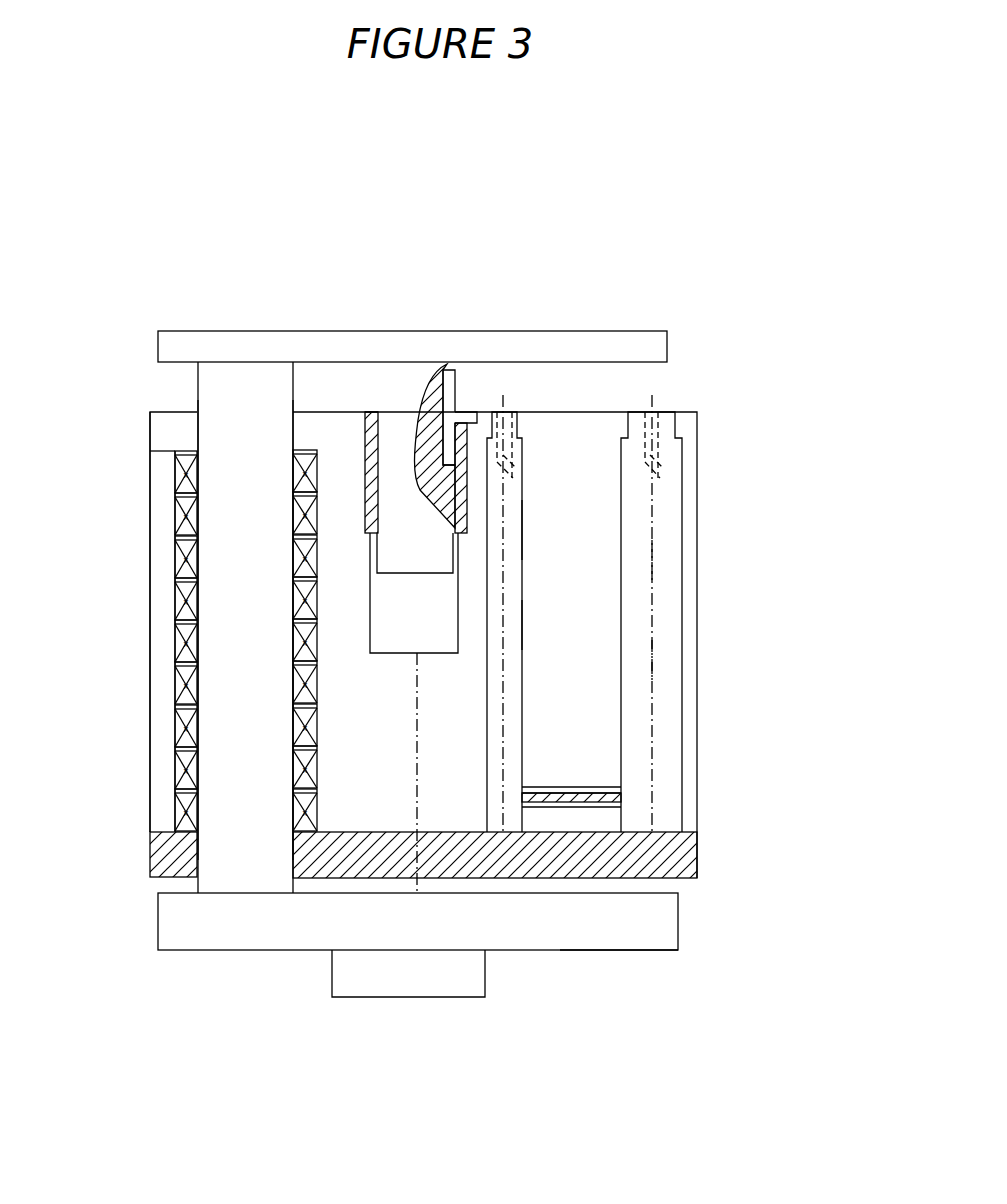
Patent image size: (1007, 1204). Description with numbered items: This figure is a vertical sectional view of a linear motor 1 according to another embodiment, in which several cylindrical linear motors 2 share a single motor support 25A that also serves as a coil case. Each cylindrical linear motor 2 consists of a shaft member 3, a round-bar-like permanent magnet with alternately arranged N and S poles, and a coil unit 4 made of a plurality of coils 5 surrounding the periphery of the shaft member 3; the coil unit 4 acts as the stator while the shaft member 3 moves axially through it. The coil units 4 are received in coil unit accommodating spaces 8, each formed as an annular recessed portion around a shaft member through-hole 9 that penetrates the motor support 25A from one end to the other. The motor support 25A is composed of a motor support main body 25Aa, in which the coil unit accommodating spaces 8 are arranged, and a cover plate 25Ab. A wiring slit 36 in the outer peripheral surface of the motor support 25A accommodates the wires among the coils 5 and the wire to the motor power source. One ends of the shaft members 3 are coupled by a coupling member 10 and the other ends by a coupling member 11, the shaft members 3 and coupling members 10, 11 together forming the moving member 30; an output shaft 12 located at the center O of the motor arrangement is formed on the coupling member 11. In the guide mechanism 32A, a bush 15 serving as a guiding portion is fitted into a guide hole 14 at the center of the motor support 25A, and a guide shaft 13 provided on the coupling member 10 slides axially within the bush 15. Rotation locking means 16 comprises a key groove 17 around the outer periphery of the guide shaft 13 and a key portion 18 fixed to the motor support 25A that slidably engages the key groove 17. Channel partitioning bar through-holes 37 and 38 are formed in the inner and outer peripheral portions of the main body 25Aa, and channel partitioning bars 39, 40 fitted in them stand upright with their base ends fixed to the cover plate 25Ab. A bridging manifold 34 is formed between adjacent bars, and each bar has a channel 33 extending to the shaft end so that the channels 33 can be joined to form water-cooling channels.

The linear actuator 1 is at (112, 422).
The cylindrical linear motor 2 is at (67, 630).
The shaft member 3 is at (208, 673).
The coil unit 4 is at (158, 636).
The coil 5 is at (168, 548).
The coil unit accommodating space 8 is at (287, 830).
The shaft member through-hole 9 is at (200, 433).
The coupling member 10 is at (655, 347).
The coupling member 11 is at (660, 918).
The output shaft 12 is at (460, 966).
The guide shaft 13 is at (418, 387).
The guide hole 14 is at (373, 615).
The bush 15 is at (367, 415).
The rotation locking means 16 is at (565, 255).
The key groove 17 is at (472, 412).
The key portion 18 is at (455, 400).
The motor support 25A is at (838, 685).
The motor support main body 25Aa is at (697, 695).
The cover plate 25Ab is at (697, 840).
The moving member 30 is at (642, 958).
The guide mechanism 32A is at (367, 380).
The channel 33 is at (512, 408).
The bridging manifold 34 is at (605, 787).
The wiring slit 36 is at (160, 498).
The channel partitioning bar through-hole 37 is at (510, 532).
The channel partitioning bar through-hole 38 is at (665, 556).
The channel partitioning bar 39 is at (513, 623).
The channel partitioning bar 40 is at (665, 660).
The center O is at (413, 893).